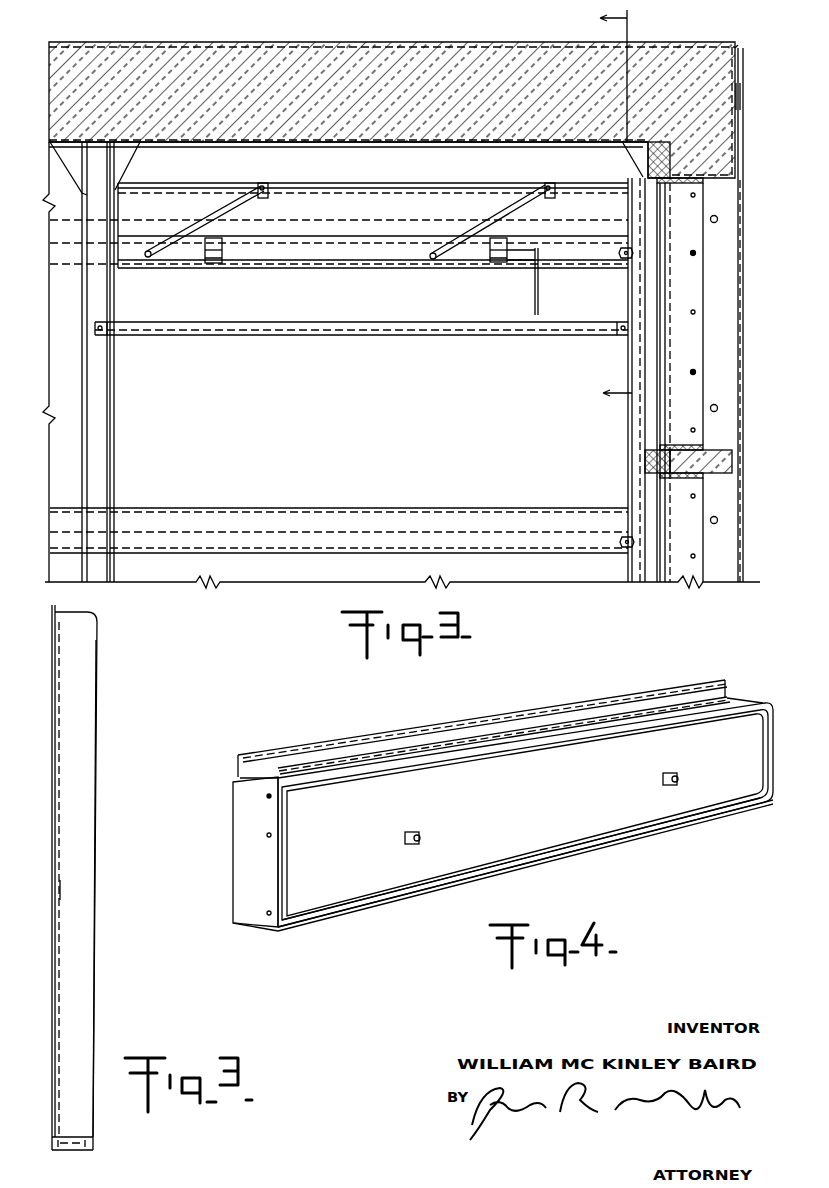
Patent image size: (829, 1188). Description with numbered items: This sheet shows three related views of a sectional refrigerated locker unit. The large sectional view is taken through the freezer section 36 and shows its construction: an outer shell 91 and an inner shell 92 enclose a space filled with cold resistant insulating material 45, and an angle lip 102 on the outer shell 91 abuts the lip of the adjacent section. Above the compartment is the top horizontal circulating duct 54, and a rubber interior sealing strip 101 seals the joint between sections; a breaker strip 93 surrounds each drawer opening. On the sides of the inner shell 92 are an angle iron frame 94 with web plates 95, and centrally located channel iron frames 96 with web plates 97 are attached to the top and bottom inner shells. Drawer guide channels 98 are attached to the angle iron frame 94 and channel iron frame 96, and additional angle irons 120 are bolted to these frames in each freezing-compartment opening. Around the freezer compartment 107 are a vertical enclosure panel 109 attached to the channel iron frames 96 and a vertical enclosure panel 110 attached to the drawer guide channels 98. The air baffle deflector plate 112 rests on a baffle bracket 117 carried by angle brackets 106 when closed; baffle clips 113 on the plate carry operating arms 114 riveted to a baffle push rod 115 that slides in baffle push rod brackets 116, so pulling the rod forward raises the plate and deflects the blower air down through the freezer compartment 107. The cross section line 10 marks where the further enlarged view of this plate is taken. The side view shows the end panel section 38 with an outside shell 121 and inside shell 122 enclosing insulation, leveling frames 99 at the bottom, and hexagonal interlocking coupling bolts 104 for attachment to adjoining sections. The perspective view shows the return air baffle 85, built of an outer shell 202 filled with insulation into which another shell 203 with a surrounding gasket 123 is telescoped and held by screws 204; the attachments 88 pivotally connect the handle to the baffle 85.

In FIG. 9, the freezer section 36 is at (266, 35).
In FIG. 9, the outer shell 91 is at (365, 42).
In FIG. 9, the cold resistant insulating material 45 is at (410, 45).
In FIG. 9, the angle lip 102 is at (462, 42).
In FIG. 9, the section line 10- 10 is at (605, 206).
In FIG. 9, the web plate 97 is at (139, 144).
In FIG. 9, the top horizontal circulating duct 54 is at (285, 160).
In FIG. 9, the interior sealing strip 101 is at (341, 147).
In FIG. 9, the inner shell 92 is at (445, 147).
In FIG. 9, the web plate 95 is at (624, 152).
In FIG. 9, the breaker strip 93 is at (692, 208).
In FIG. 9, the angle iron frame 94 is at (640, 408).
In FIG. 9, the air baffle deflector plate 112 is at (388, 186).
In FIG. 9, the baffle bracket 117 is at (358, 196).
In FIG. 9, the operating arm 114 is at (221, 211).
In FIG. 9, the baffle clip 113 is at (266, 189).
In FIG. 9, the angle bracket 106 is at (220, 240).
In FIG. 9, the baffle push rod bracket 116 is at (210, 263).
In FIG. 9, the baffle push rod 115 is at (366, 276).
In FIG. 9, the drawer guide channel 98 is at (626, 262).
In FIG. 9, the vertical enclosure panel 109 is at (115, 360).
In FIG. 9, the channel iron frame 96 is at (105, 487).
In FIG. 9, the vertical enclosure panel 110 is at (393, 349).
In FIG. 9, the angle iron 120 is at (508, 336).
In FIG. 9, the freezer compartment 107 is at (378, 418).
In FIG. 3, the end panel section 38 is at (84, 617).
In FIG. 3, the outside shell 121 is at (97, 770).
In FIG. 3, the hexagonal interlocking coupling bolt 104 is at (61, 713).
In FIG. 3, the inside shell 122 is at (60, 901).
In FIG. 3, the leveling frame 99 is at (52, 1143).
In FIG. 4, the outer shell 202 is at (240, 804).
In FIG. 4, the screw 204 is at (268, 880).
In FIG. 4, the shell 203 is at (488, 782).
In FIG. 4, the attachment 88 is at (420, 834).
In FIG. 4, the return air baffle 85 is at (510, 878).
In FIG. 4, the gasket 123 is at (368, 899).